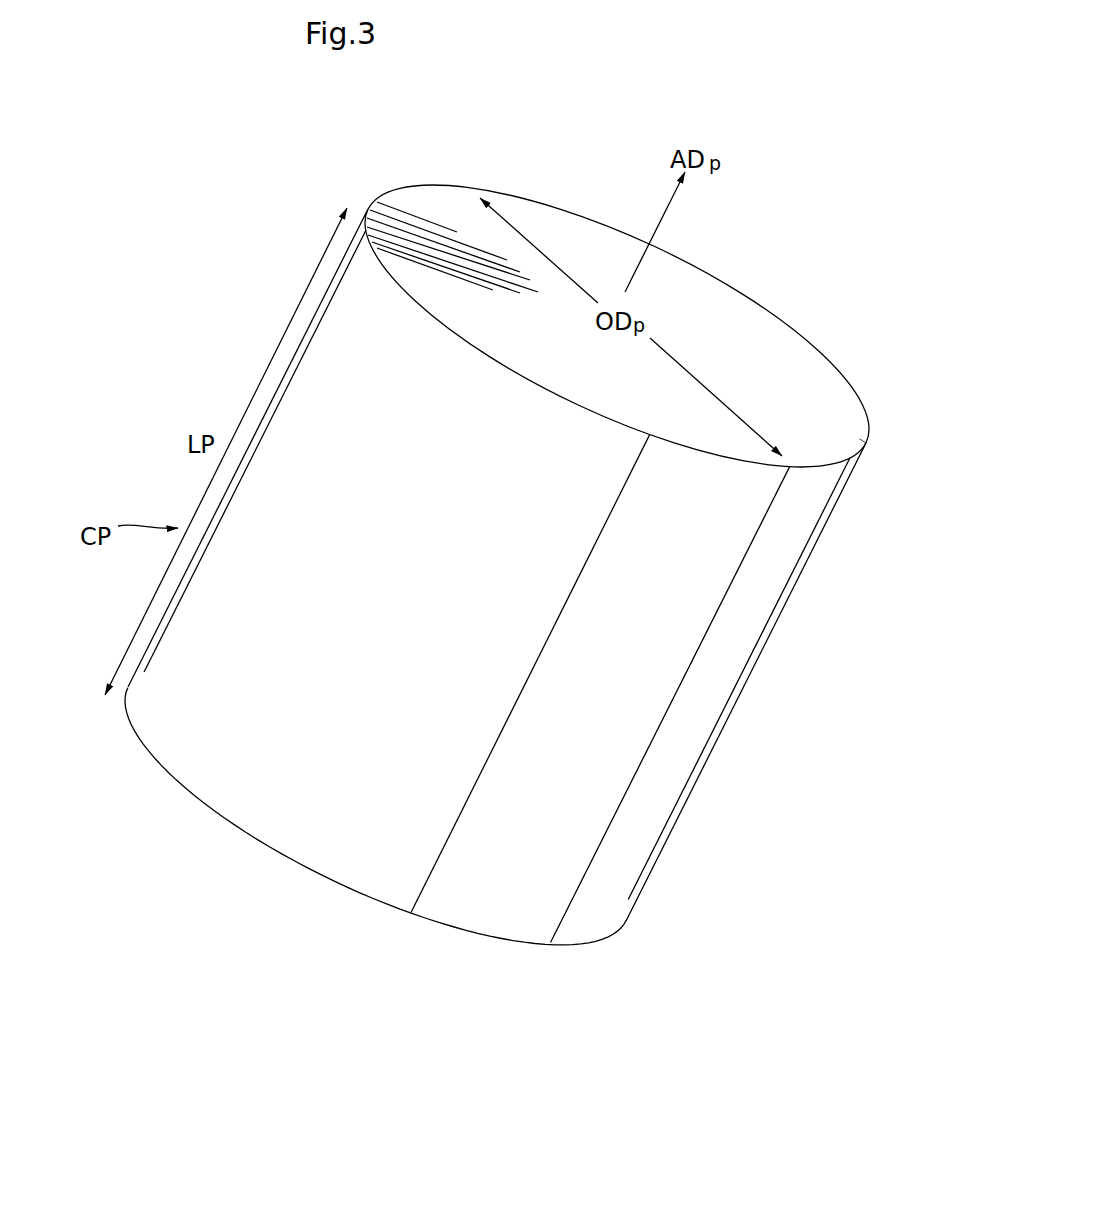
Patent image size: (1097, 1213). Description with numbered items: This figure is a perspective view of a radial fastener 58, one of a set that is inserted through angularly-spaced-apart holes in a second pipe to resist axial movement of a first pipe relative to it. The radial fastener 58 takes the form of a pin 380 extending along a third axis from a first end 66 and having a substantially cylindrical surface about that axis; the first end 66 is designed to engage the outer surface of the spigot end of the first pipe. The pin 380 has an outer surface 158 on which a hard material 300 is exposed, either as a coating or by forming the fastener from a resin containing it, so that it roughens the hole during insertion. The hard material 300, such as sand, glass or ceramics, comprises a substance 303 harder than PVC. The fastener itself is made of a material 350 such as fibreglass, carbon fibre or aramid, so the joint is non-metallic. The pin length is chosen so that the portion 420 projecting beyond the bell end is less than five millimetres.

The radial fastener 58 is at (268, 295).
The first end 66 is at (443, 937).
The outer surface 158 is at (777, 531).
The hard material 300 is at (680, 642).
The substance 303 is at (612, 725).
The material 350 is at (727, 315).
The pin 380 is at (810, 600).
The portion 420 is at (882, 426).